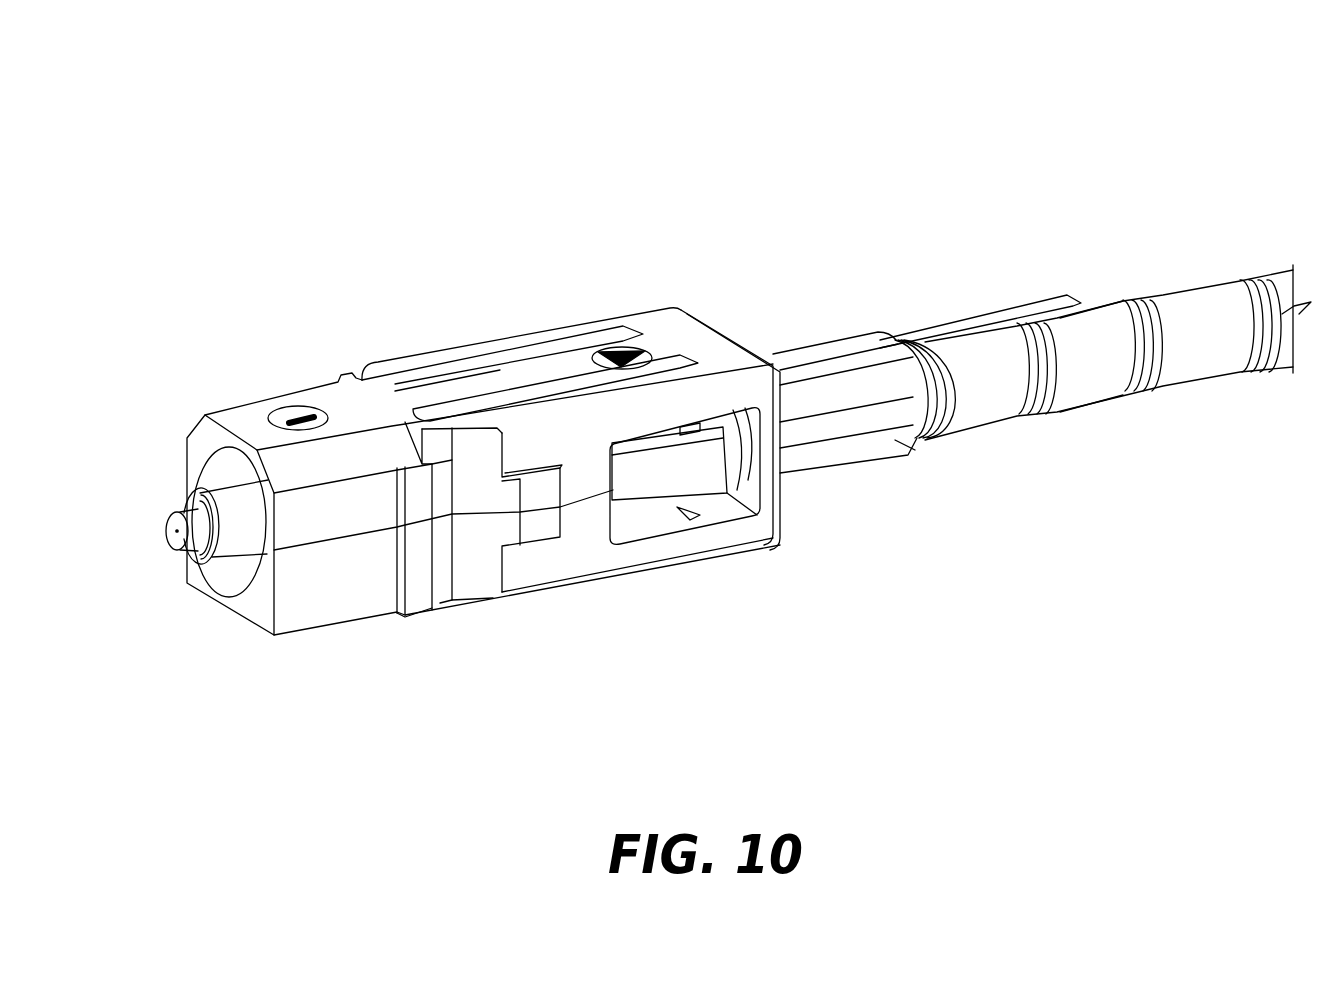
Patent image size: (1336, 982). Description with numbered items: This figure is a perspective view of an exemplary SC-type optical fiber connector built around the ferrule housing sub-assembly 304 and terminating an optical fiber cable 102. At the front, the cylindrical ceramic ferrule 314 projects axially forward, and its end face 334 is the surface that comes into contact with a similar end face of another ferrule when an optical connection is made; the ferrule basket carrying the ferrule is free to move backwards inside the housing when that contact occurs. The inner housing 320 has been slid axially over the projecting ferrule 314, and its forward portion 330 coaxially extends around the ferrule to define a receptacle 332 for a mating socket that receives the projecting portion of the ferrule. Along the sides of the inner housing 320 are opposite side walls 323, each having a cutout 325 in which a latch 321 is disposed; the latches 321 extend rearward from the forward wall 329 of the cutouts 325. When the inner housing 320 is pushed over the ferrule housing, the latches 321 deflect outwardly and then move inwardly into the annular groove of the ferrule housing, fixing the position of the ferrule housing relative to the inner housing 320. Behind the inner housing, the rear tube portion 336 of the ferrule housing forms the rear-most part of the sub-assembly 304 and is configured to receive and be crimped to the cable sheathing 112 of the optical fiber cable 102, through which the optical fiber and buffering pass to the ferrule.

The ferrule housing sub-assembly 304 is at (601, 165).
The optical fiber cable 102 is at (1113, 282).
The cable sheathing 112 is at (1097, 391).
The ferrule 314 is at (216, 503).
The inner housing 320 is at (590, 567).
The latches 321 is at (642, 495).
The side walls 323 is at (578, 536).
The cutouts 325 is at (727, 526).
The forward wall 329 is at (610, 472).
The forward portion 330 is at (340, 607).
The receptacle 332 is at (241, 576).
The end face 334 is at (172, 543).
The rear tube portion 336 is at (822, 475).